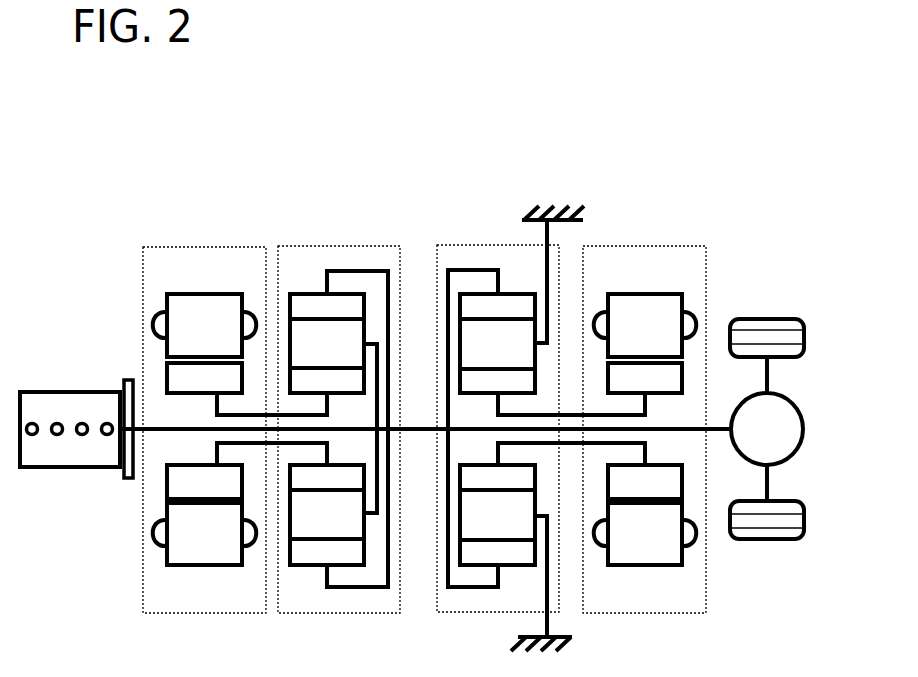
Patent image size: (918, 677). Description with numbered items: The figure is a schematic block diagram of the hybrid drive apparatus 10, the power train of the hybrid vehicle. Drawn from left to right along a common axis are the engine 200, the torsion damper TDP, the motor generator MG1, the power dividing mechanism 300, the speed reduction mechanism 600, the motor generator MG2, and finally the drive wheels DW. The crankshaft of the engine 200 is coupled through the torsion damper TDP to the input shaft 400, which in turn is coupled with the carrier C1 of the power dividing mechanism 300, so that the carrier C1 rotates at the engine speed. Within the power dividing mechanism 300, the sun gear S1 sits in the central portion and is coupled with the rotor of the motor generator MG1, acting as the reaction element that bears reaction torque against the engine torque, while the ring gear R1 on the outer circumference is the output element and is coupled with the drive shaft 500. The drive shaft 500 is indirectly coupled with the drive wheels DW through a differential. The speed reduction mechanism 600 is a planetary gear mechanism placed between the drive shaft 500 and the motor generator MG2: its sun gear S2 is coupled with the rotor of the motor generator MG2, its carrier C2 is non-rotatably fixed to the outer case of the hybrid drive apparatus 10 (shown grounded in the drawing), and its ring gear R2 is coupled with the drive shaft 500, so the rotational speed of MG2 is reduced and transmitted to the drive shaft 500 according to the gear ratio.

The hybrid drive apparatus 10 is at (55, 138).
The engine 200 is at (68, 392).
The torsion damper TDP is at (124, 380).
The motor generator MG1 is at (235, 418).
The motor generator MG2 is at (644, 418).
The power dividing mechanism 300 is at (339, 418).
The speed reduction mechanism 600 is at (541, 428).
The input shaft 400 is at (260, 418).
The drive shaft 500 is at (565, 418).
The ring gear R1 is at (339, 429).
The carrier C1 is at (333, 429).
The sun gear S1 is at (327, 429).
The ring gear R2 is at (491, 428).
The carrier C2 is at (522, 428).
The sun gear S2 is at (552, 429).
The drive wheels DW is at (767, 319).